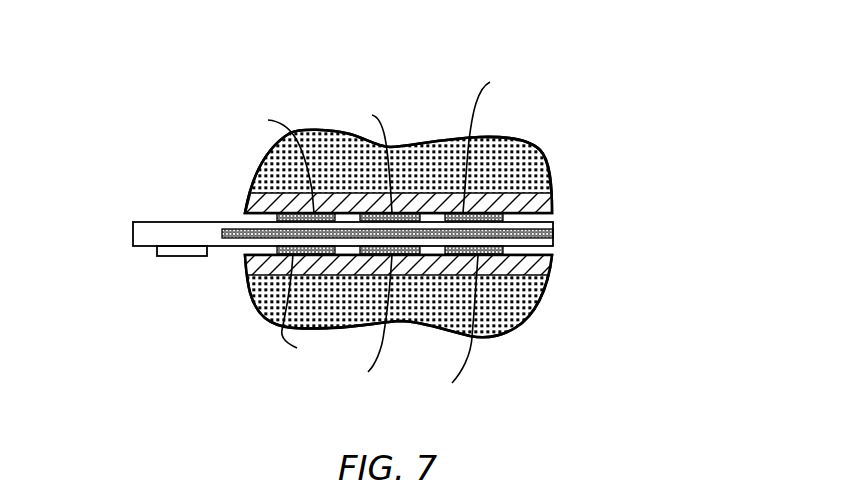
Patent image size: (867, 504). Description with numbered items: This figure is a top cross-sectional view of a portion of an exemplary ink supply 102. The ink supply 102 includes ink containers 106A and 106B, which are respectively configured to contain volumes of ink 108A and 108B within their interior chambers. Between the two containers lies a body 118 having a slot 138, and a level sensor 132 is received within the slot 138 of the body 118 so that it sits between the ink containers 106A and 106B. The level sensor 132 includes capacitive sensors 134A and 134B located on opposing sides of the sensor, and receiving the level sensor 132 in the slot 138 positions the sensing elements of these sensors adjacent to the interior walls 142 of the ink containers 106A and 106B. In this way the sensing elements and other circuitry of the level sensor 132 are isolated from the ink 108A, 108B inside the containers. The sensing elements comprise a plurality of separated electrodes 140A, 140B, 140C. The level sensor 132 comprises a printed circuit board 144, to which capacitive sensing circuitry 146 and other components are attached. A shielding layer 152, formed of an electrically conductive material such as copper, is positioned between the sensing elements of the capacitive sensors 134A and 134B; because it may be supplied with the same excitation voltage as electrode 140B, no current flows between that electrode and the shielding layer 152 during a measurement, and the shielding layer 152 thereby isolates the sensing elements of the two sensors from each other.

The ink supply 102 is at (642, 46).
The level sensor 132 is at (181, 142).
The capacitive sensor 134B is at (227, 182).
The capacitive sensor 134A is at (237, 309).
The ink container 106B is at (558, 152).
The ink container 106A is at (557, 314).
The volume of ink 108B is at (497, 155).
The volume of ink 108A is at (495, 310).
The interior wall 142 is at (543, 197).
The electrode 140A is at (282, 233).
The electrode 140B is at (355, 242).
The electrode 140C is at (467, 233).
The body 118 is at (248, 197).
The slot 138 is at (559, 213).
The printed circuit board 144 is at (148, 229).
The shielding layer 152 is at (553, 233).
The capacitive sensing circuitry 146 is at (178, 257).